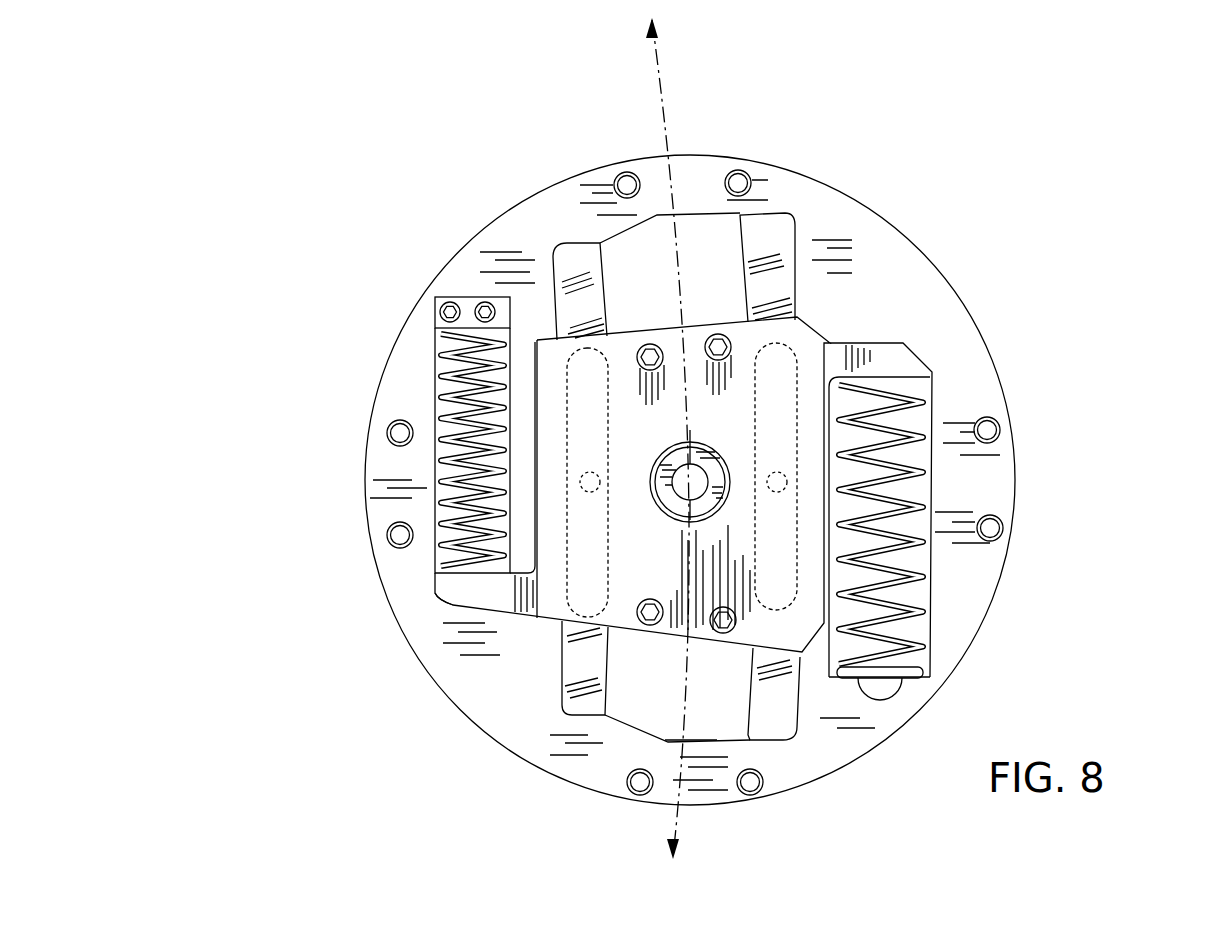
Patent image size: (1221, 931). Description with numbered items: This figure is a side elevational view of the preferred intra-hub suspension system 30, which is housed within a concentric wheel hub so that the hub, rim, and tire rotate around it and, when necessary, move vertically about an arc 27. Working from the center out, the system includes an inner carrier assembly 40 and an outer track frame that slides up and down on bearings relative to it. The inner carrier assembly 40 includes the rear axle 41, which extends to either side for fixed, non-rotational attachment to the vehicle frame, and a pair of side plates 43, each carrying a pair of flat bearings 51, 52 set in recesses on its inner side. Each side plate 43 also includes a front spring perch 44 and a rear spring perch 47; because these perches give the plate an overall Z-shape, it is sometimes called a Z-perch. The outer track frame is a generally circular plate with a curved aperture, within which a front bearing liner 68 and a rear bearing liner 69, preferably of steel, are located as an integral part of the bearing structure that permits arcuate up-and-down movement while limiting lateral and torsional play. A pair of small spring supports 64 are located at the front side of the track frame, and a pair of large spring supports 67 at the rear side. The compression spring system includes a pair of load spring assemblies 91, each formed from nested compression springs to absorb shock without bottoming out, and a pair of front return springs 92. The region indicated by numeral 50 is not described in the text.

The arc 27 is at (668, 436).
The intra-hub suspension system 30 is at (990, 172).
The inner carrier assembly 40 is at (548, 587).
The rear axle 41 is at (707, 442).
The side plate 43 is at (643, 431).
The front spring perch 44 is at (495, 599).
The rear spring perch 47 is at (895, 352).
The upper block 50 is at (518, 238).
The flat bearing 51 is at (592, 603).
The flat bearing 52 is at (775, 598).
The small spring support 64 is at (468, 305).
The large spring support 67 is at (890, 688).
The front bearing liner 68 is at (577, 250).
The rear bearing liner 69 is at (768, 227).
The load spring assembly 91 is at (923, 472).
The front return spring 92 is at (455, 471).